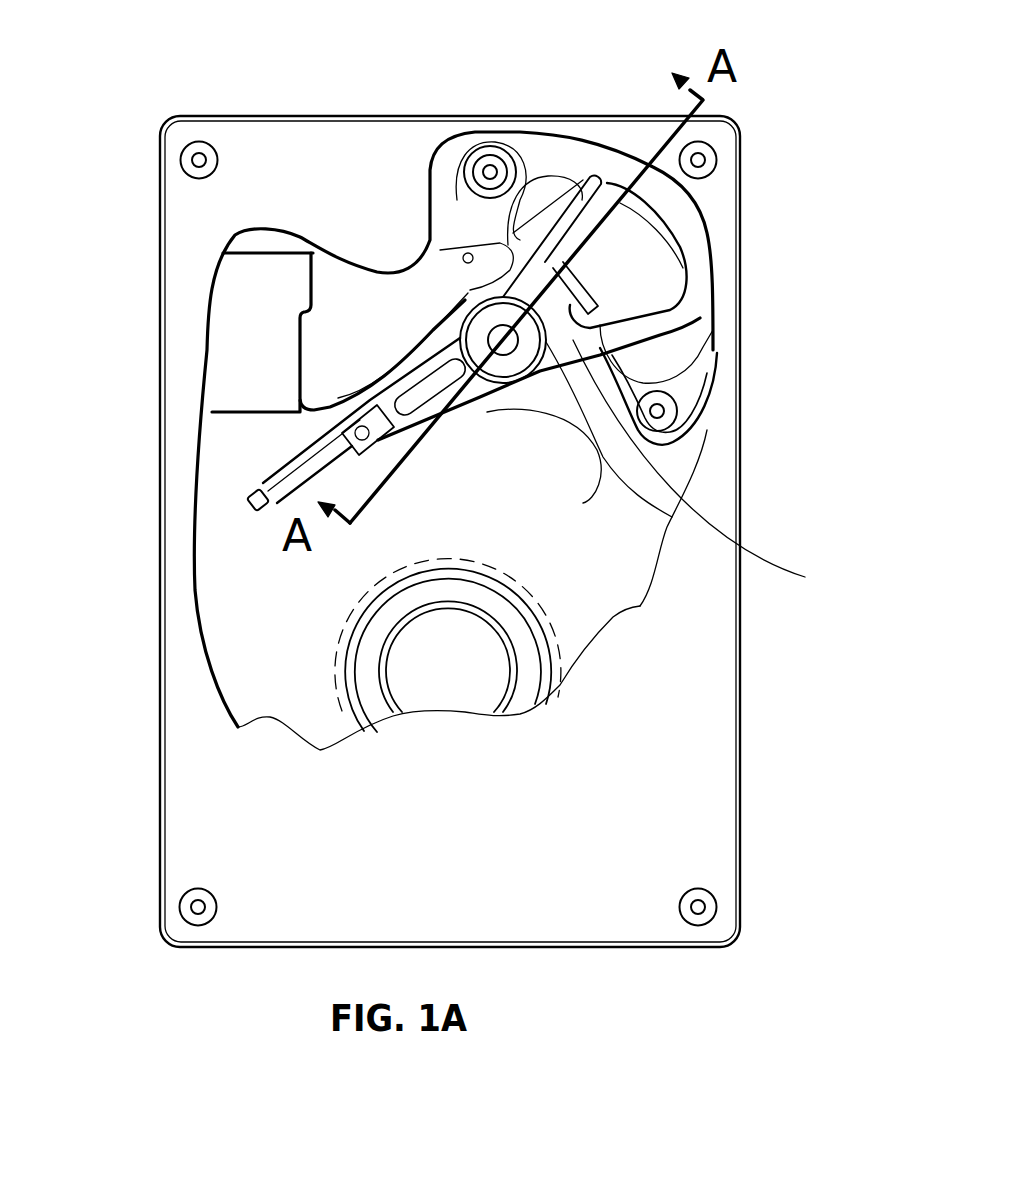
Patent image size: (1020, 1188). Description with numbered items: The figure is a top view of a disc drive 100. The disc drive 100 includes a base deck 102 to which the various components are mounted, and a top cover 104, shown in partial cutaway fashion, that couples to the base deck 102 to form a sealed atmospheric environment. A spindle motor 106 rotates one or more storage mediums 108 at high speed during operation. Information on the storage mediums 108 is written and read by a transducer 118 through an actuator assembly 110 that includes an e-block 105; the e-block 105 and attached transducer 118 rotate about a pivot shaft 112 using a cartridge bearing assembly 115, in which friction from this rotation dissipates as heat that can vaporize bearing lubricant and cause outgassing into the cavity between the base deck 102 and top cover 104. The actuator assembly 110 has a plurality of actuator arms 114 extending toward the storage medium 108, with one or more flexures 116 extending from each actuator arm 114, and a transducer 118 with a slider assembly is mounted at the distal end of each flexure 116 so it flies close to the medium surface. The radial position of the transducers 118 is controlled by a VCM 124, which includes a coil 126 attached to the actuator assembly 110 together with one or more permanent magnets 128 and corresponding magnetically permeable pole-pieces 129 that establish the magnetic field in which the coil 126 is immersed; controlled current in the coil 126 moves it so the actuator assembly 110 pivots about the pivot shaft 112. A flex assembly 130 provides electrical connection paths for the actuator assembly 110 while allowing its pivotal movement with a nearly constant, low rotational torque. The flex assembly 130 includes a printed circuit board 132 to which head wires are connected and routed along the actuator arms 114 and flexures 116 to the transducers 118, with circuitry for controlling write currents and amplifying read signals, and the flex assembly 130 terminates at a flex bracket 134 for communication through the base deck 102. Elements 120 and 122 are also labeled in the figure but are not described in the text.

The disc drive 100 is at (218, 90).
The base deck 102 is at (215, 457).
The top cover 104 is at (205, 745).
The e-block 105 is at (725, 468).
The spindle motor 106 is at (462, 690).
The storage medium 108 is at (617, 570).
The actuator assembly 110 is at (488, 410).
The pivot shaft 112 is at (565, 493).
The actuator arm 114 is at (410, 440).
The cartridge bearing assembly 115 is at (527, 333).
The flexure 116 is at (312, 477).
The transducer 118 is at (247, 517).
The opening 120 is at (340, 630).
The pin 122 is at (462, 251).
The VCM 124 is at (556, 158).
The coil 126 is at (690, 248).
The permanent magnet 128 is at (535, 200).
The magnetically permeable pole-piece 129 is at (690, 382).
The flex assembly 130 is at (421, 338).
The printed circuit board 132 is at (428, 262).
The flex bracket 134 is at (237, 343).